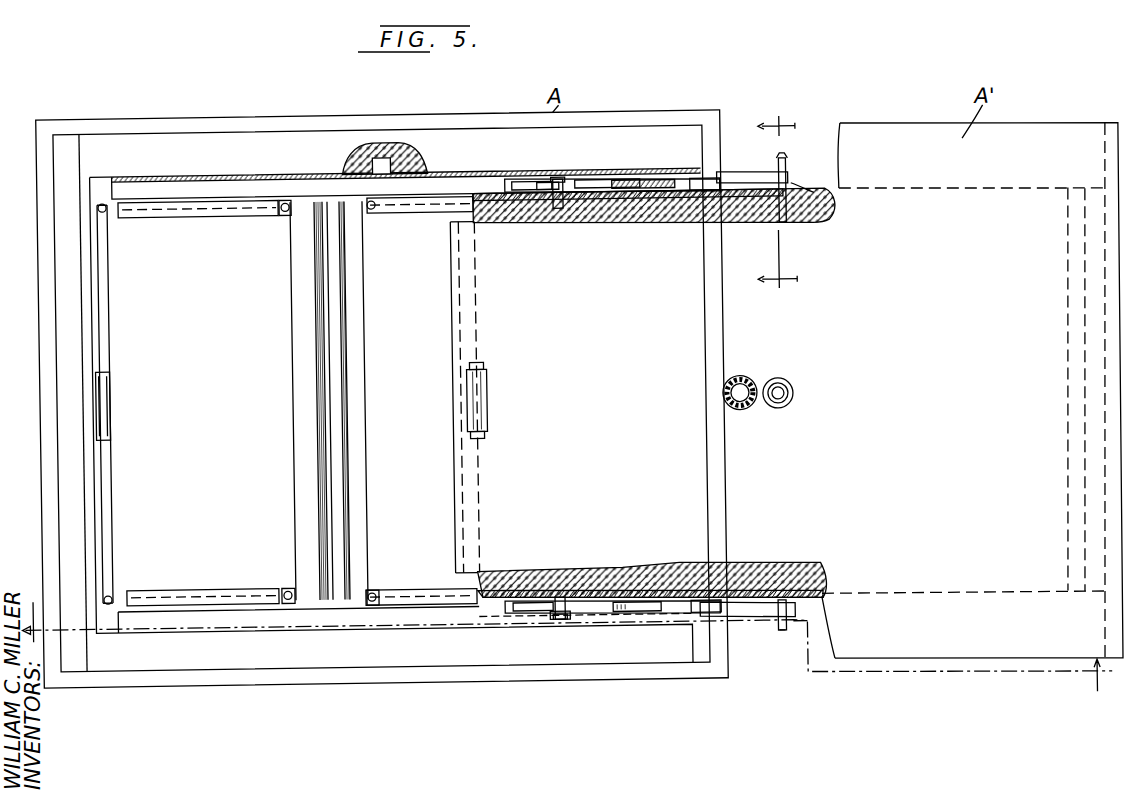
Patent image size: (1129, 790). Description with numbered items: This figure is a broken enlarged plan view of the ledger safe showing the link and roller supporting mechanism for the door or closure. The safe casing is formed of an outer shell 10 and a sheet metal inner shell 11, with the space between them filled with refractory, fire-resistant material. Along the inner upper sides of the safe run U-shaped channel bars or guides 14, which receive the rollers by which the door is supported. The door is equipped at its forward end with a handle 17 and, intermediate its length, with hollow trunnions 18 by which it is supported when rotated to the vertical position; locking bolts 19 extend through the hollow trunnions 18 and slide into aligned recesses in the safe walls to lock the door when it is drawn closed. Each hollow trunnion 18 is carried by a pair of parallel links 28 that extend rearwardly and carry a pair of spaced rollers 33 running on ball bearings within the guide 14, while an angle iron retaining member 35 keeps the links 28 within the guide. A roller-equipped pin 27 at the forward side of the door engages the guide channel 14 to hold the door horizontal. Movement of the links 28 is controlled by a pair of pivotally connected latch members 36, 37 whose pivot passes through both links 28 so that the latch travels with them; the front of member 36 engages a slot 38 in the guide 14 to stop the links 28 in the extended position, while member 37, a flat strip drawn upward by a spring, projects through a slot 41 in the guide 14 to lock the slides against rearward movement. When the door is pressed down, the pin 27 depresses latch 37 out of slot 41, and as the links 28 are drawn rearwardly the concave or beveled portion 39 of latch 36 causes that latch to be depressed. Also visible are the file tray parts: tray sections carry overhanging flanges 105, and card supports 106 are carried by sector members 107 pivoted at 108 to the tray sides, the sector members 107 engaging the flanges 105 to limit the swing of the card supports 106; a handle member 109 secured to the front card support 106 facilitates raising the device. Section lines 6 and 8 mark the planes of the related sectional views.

The shell 10 is at (41, 381).
The sheet metal inner shell 11 is at (101, 542).
The channel bars or guides 14 is at (641, 174).
The handle 17 is at (487, 386).
The hollow trunnions 18 is at (792, 189).
The locking bolts 19 is at (789, 166).
The roller-equipped pin 27 is at (560, 180).
The parallel links 28 is at (742, 178).
The rollers 33 is at (512, 182).
The angle iron retaining member 35 is at (664, 218).
The latch member 36 is at (630, 184).
The latch member 37 is at (549, 185).
The slot 38 is at (656, 571).
The concave or beveled portion 39 is at (617, 183).
The slot 41 is at (550, 622).
The overhanging flanges 105 is at (222, 215).
The card supports 106 is at (345, 465).
The sector members 107 is at (372, 201).
The pivot 108 is at (370, 590).
The handle member 109 is at (111, 401).
The section line 6— 6 is at (563, 645).
The section line 8— 8 is at (776, 203).